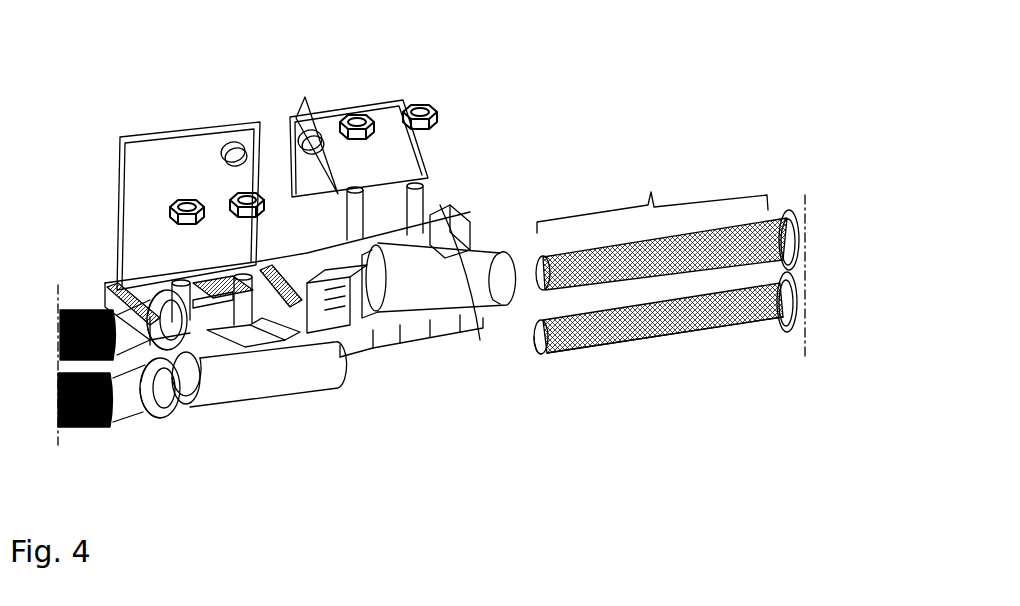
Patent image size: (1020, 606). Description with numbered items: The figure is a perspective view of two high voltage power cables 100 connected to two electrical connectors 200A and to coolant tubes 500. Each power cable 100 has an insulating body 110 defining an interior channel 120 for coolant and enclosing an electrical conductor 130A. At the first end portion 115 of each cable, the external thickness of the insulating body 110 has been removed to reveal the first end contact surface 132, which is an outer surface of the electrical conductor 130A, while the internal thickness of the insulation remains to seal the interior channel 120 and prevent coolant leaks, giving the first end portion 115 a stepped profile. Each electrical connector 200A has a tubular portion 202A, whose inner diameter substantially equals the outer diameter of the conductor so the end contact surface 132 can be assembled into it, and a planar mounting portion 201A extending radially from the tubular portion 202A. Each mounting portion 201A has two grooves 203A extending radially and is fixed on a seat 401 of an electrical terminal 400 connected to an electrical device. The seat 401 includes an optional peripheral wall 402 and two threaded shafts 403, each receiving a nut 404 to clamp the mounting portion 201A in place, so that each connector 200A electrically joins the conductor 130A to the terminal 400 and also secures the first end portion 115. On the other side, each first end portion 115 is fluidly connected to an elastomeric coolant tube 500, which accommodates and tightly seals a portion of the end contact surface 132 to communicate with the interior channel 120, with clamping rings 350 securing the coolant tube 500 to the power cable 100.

The power cable 100 is at (717, 271).
The insulating body 110 is at (805, 233).
The first end portion 115 is at (543, 357).
The interior channel 120 is at (543, 340).
The electrical conductor 130A is at (643, 348).
The first end contact surface 132 is at (652, 192).
The electrical connector 200A is at (313, 393).
The mounting portion 201A is at (477, 253).
The tubular portion 202A is at (383, 323).
The groove 203A is at (472, 317).
The clamping ring 350 is at (147, 400).
The electrical terminal 400 is at (178, 118).
The seat 401 is at (440, 205).
The peripheral wall 402 is at (417, 193).
The shaft 403 is at (293, 121).
The nut 404 is at (417, 100).
The coolant tube 500 is at (82, 300).